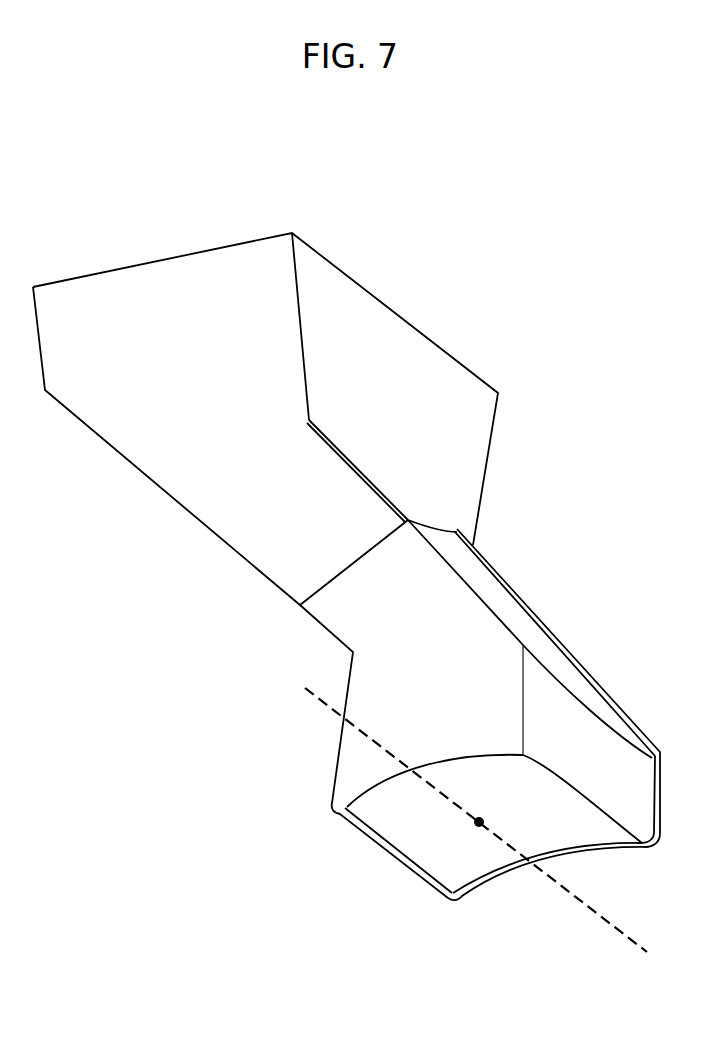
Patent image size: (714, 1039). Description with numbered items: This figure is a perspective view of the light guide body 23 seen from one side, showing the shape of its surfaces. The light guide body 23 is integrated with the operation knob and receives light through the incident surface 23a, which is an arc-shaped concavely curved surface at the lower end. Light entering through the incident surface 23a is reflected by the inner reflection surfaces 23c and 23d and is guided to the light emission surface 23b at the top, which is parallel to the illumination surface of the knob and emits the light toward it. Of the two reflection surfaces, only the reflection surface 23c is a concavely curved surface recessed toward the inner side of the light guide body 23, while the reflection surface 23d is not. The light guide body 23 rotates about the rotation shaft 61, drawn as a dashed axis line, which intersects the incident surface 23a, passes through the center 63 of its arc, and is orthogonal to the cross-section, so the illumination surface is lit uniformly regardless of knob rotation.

The light guide body 23 is at (150, 765).
The incident surface 23a is at (410, 840).
The light emission surface 23b is at (268, 235).
The reflection surface 23c is at (507, 597).
The reflection surface 23d is at (183, 510).
The rotation shaft 61 is at (615, 930).
The center 63 is at (479, 828).